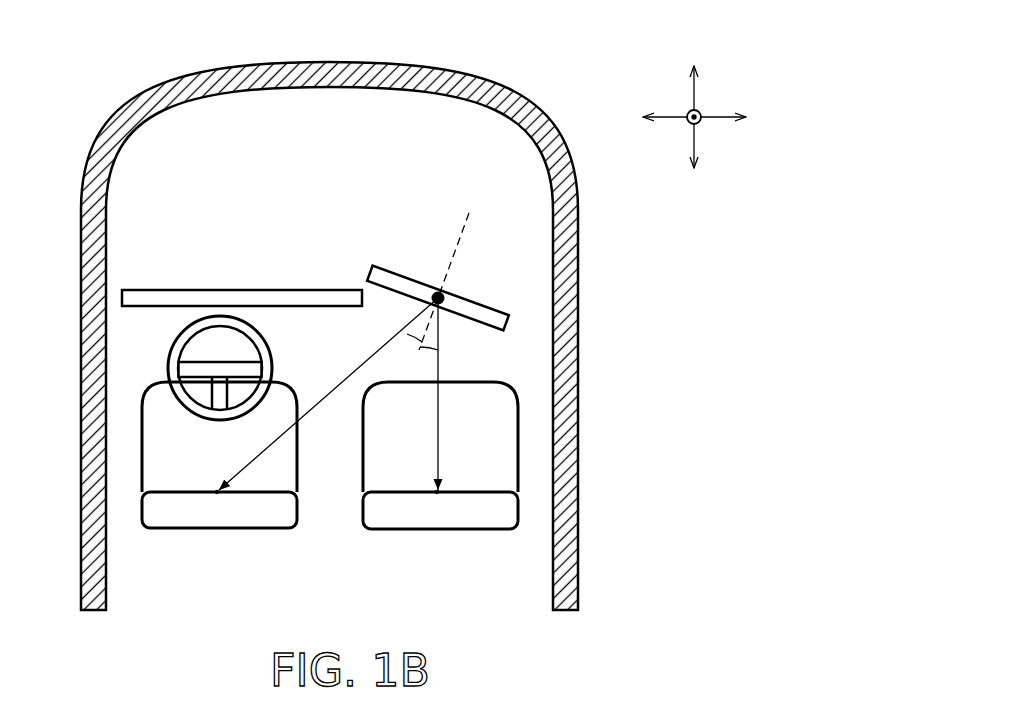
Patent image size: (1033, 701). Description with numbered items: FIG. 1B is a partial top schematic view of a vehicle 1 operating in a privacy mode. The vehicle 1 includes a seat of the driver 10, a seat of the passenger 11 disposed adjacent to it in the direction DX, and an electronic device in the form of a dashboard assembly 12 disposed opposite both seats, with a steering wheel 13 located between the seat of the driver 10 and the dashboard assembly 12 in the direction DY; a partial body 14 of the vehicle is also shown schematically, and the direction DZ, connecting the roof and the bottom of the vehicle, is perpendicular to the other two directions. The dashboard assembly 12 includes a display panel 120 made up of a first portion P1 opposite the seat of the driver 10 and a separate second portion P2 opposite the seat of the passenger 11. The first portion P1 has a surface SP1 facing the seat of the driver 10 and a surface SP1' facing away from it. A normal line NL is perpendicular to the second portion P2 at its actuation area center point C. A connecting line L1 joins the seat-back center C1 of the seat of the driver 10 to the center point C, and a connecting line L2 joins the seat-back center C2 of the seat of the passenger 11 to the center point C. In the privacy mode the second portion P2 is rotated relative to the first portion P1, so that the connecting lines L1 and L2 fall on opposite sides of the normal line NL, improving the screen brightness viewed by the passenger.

The vehicle 1 is at (358, 350).
The seat of the driver 10 is at (219, 509).
The seat of the passenger 11 is at (440, 509).
The dashboard assembly 12 is at (329, 260).
The display panel 120 is at (329, 277).
The steering wheel 13 is at (167, 359).
The partial body 14 is at (82, 462).
The first portion P1 is at (188, 281).
The second portion P2 is at (505, 302).
The surface SP1 is at (187, 326).
The surface SP1' is at (187, 269).
The actuation area center point C is at (446, 296).
The seat-back center C1 is at (215, 490).
The seat-back center C2 is at (432, 490).
The connecting line L1 is at (330, 393).
The connecting line L2 is at (440, 432).
The normal line NL is at (463, 229).
The direction DX is at (720, 114).
The direction DY is at (694, 88).
The direction DZ is at (701, 124).